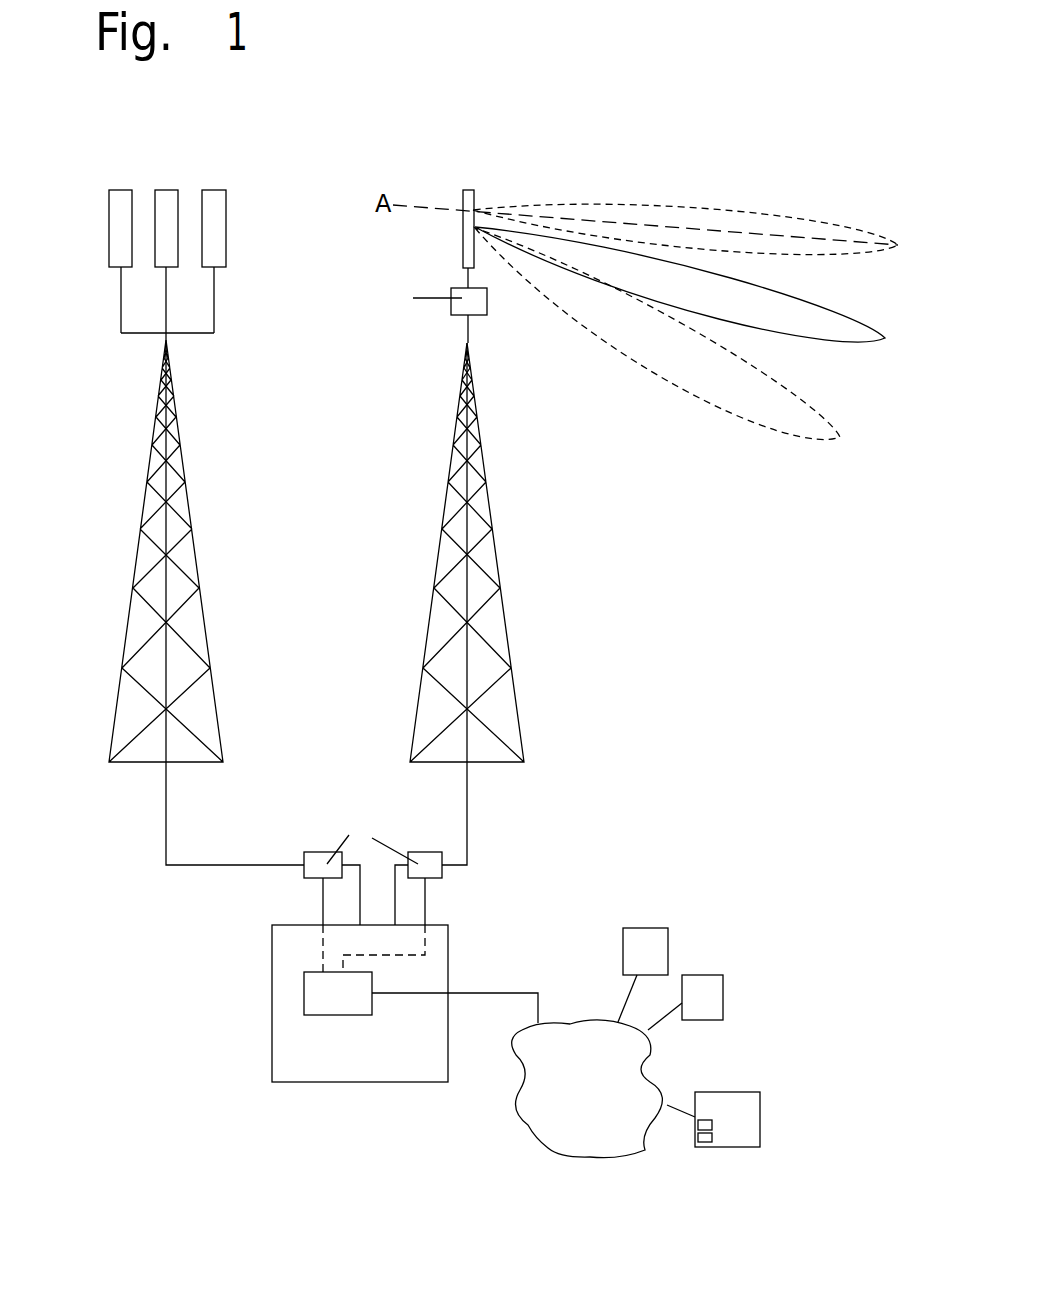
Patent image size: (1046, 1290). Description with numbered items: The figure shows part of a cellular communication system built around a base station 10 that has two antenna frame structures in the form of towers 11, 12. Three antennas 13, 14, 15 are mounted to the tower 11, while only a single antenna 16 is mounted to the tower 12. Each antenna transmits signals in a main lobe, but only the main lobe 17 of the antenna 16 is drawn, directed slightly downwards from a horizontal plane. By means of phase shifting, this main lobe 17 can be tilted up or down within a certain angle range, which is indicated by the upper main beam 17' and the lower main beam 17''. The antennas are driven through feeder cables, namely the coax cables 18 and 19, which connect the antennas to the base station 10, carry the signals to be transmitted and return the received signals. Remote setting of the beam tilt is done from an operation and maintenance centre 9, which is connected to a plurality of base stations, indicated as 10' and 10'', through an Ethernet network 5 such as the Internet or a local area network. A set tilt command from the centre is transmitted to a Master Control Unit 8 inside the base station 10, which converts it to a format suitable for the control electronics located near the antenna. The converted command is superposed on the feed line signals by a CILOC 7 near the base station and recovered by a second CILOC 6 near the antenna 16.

The Ethernet network 5 is at (540, 1103).
The second CILOC 6 is at (452, 312).
The CILOC 7 is at (415, 858).
The Master Control Unit (MCU) 8 is at (332, 1005).
The operation and maintenance centre (OMC) 9 is at (717, 1090).
The base station 10 is at (395, 998).
The base station 10' is at (676, 948).
The base station 10'' is at (731, 977).
The tower 11 is at (187, 492).
The tower 12 is at (496, 462).
The antenna 13 is at (118, 205).
The antenna 14 is at (169, 198).
The antenna 15 is at (208, 198).
The antenna 16 is at (477, 192).
The main lobe 17 is at (684, 327).
The upper main beam 17' is at (685, 210).
The lower main beam 17'' is at (657, 355).
The coax cable 18 is at (167, 822).
The coax cable 19 is at (468, 826).